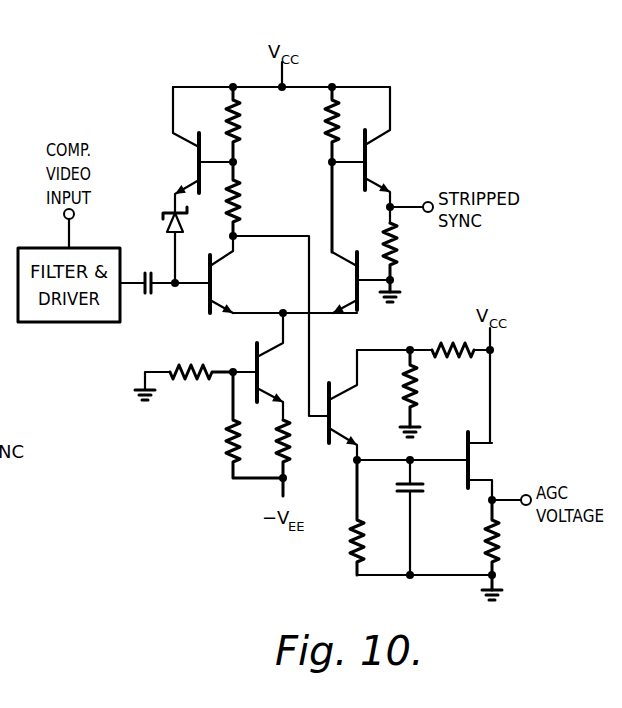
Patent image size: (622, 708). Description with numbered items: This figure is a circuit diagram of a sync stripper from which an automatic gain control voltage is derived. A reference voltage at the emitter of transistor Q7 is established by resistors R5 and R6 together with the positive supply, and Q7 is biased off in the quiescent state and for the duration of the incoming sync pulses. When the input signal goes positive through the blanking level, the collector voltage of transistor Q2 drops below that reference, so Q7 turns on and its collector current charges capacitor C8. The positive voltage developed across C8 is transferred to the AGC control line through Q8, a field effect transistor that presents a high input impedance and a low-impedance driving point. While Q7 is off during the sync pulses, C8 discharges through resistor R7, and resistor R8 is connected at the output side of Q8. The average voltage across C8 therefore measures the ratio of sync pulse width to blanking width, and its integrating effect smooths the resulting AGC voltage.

The transistor Q2 is at (226, 274).
The transistor Q7 is at (344, 405).
The field effect transistor Q8 is at (483, 466).
The resistor R5 is at (421, 383).
The resistor R6 is at (458, 344).
The resistor R7 is at (346, 542).
The resistor R8 is at (484, 542).
The capacitor C8 is at (418, 493).